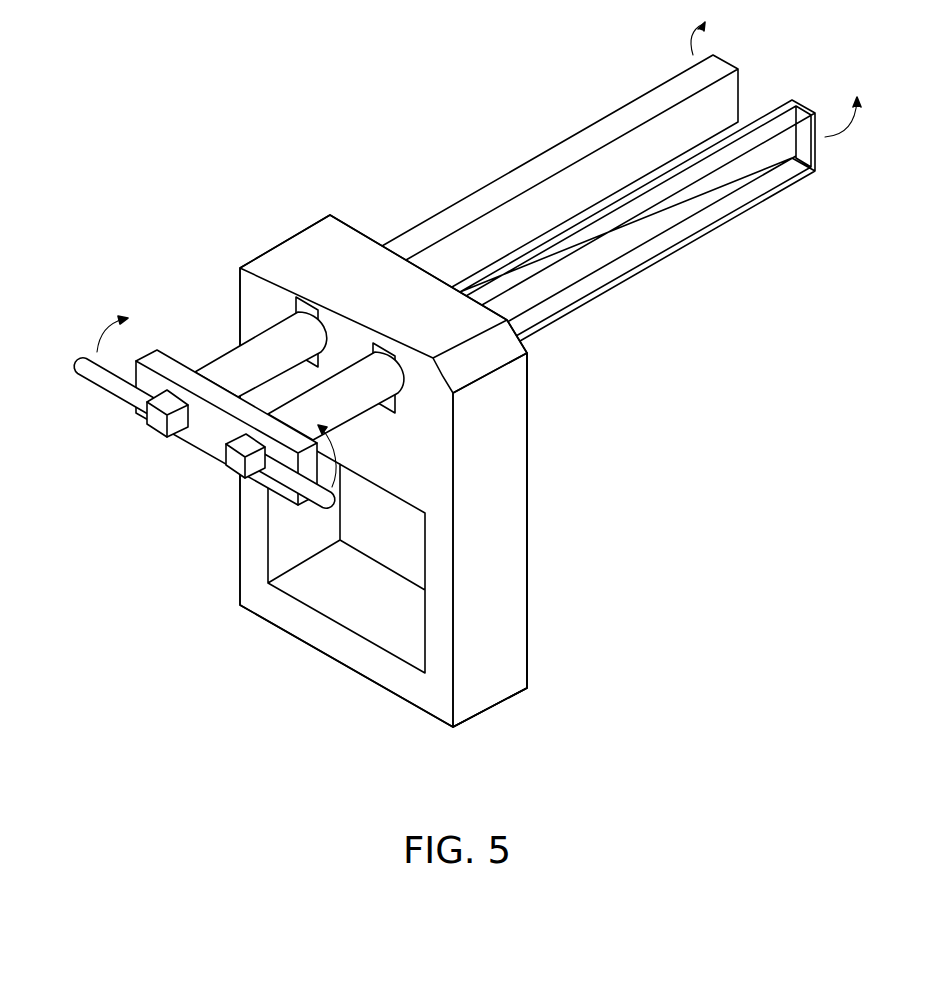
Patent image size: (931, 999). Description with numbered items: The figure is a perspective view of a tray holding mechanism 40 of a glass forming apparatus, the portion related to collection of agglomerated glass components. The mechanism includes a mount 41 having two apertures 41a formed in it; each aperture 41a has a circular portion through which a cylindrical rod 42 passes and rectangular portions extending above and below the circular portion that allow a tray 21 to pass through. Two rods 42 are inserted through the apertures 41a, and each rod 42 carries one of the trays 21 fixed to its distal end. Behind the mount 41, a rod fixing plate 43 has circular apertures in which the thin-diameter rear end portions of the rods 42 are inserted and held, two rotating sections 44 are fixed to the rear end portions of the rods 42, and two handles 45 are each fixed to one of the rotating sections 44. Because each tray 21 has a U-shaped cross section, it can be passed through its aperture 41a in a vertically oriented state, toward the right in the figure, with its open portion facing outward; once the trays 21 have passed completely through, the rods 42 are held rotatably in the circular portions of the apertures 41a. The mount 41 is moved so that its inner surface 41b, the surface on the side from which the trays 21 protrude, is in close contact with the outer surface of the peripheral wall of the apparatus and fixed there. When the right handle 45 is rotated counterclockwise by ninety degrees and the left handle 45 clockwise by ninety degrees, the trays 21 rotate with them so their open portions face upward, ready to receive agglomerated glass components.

The tray 21 is at (668, 85).
The tray holding mechanism 40 is at (612, 420).
The mount 41 is at (429, 471).
The aperture 41a is at (392, 403).
The inner surface 41b is at (527, 617).
The rod 42 is at (224, 358).
The rod fixing plate 43 is at (159, 352).
The rotating section 44 is at (158, 418).
The handle 45 is at (85, 362).